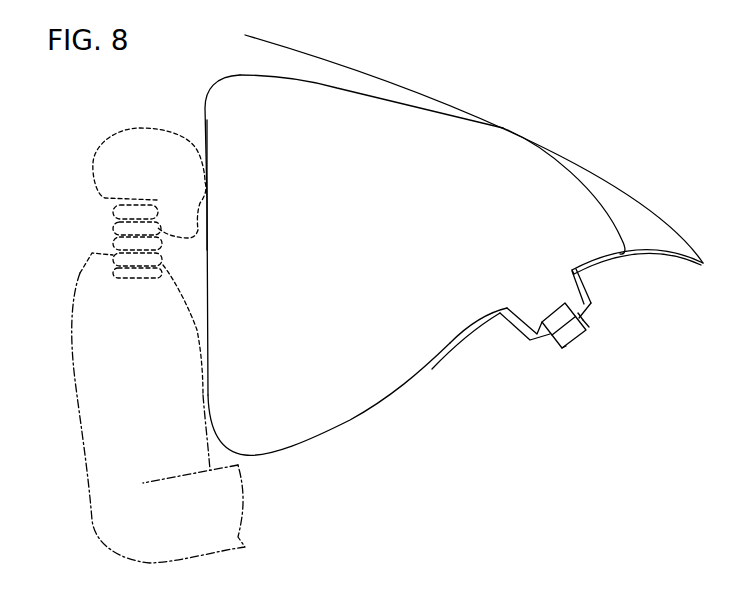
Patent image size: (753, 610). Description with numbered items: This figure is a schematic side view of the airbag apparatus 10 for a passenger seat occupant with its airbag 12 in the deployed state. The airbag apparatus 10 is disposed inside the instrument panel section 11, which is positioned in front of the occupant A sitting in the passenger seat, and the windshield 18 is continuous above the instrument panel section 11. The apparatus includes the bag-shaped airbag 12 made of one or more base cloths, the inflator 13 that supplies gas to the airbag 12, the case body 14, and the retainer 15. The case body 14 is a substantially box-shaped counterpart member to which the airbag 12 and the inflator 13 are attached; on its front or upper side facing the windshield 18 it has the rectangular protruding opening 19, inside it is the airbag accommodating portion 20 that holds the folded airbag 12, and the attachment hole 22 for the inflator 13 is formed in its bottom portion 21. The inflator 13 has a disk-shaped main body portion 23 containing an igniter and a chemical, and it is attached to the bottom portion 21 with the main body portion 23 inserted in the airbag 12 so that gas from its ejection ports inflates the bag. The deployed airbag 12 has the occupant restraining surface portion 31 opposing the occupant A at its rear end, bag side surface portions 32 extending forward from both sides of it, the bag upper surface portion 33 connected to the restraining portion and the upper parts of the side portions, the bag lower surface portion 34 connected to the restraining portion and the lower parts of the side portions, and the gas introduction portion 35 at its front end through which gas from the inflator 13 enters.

The airbag apparatus 10 is at (660, 293).
The instrument panel section 11 is at (653, 250).
The airbag 12 is at (338, 87).
The inflator 13 is at (575, 338).
The case body 14 is at (589, 307).
The retainer 15 is at (586, 293).
The windshield 18 is at (285, 47).
The protruding opening 19 is at (567, 272).
The airbag accommodating portion 20 is at (536, 342).
The bottom portion 21 is at (590, 325).
The attachment hole 22 is at (563, 348).
The main body portion 23 is at (552, 308).
The occupant restraining surface portion 31 is at (203, 123).
The bag side surface portions 32 is at (343, 408).
The bag upper surface portion 33 is at (583, 178).
The bag lower surface portion 34 is at (446, 343).
The gas introduction portion 35 is at (521, 326).
The occupant A is at (78, 283).